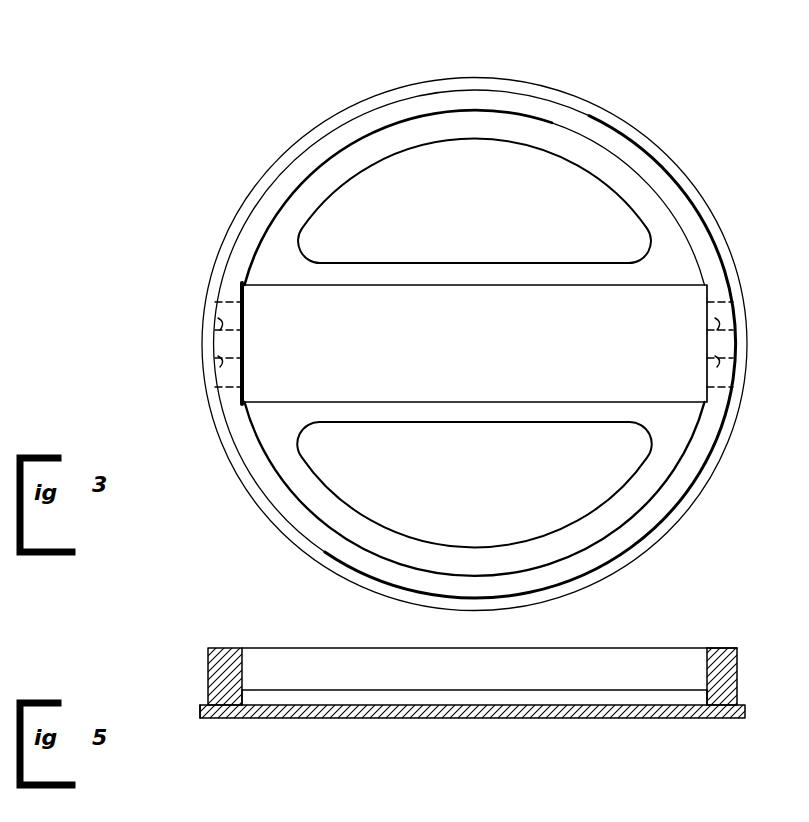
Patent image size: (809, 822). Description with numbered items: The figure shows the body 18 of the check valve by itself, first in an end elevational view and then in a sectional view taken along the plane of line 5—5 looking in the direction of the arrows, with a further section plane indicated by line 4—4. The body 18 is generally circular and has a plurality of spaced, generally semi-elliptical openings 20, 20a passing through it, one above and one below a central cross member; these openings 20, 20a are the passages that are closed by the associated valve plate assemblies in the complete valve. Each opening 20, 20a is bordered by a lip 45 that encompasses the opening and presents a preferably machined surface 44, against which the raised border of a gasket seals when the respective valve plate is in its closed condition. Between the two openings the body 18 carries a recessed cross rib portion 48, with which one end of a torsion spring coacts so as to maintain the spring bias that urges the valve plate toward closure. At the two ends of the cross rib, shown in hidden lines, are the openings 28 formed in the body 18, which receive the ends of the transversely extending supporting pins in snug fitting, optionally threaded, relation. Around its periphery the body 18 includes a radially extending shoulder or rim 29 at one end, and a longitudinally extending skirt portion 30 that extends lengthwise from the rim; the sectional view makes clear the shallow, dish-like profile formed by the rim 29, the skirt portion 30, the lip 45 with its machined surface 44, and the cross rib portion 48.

In FIG. 3, the body 18 is at (583, 98).
In FIG. 5, the body 18 is at (421, 719).
In FIG. 3, the opening 20 is at (560, 156).
In FIG. 5, the opening 20 is at (612, 698).
In FIG. 3, the opening 20a is at (358, 512).
In FIG. 3, the openings 28 is at (152, 373).
In FIG. 5, the openings 28 is at (207, 657).
In FIG. 3, the shoulder or rim 29 is at (380, 90).
In FIG. 5, the shoulder or rim 29 is at (203, 720).
In FIG. 3, the skirt portion 30 is at (690, 489).
In FIG. 5, the skirt portion 30 is at (711, 648).
In FIG. 3, the machined surface 44 is at (655, 205).
In FIG. 5, the machined surface 44 is at (390, 689).
In FIG. 3, the lip 45 is at (565, 565).
In FIG. 5, the lip 45 is at (264, 719).
In FIG. 3, the recessed cross rib portion 48 is at (398, 380).
In FIG. 5, the recessed cross rib portion 48 is at (516, 719).
In FIG. 3, the section line 4- 4 is at (472, 38).
In FIG. 3, the section line 5- 5 is at (145, 348).